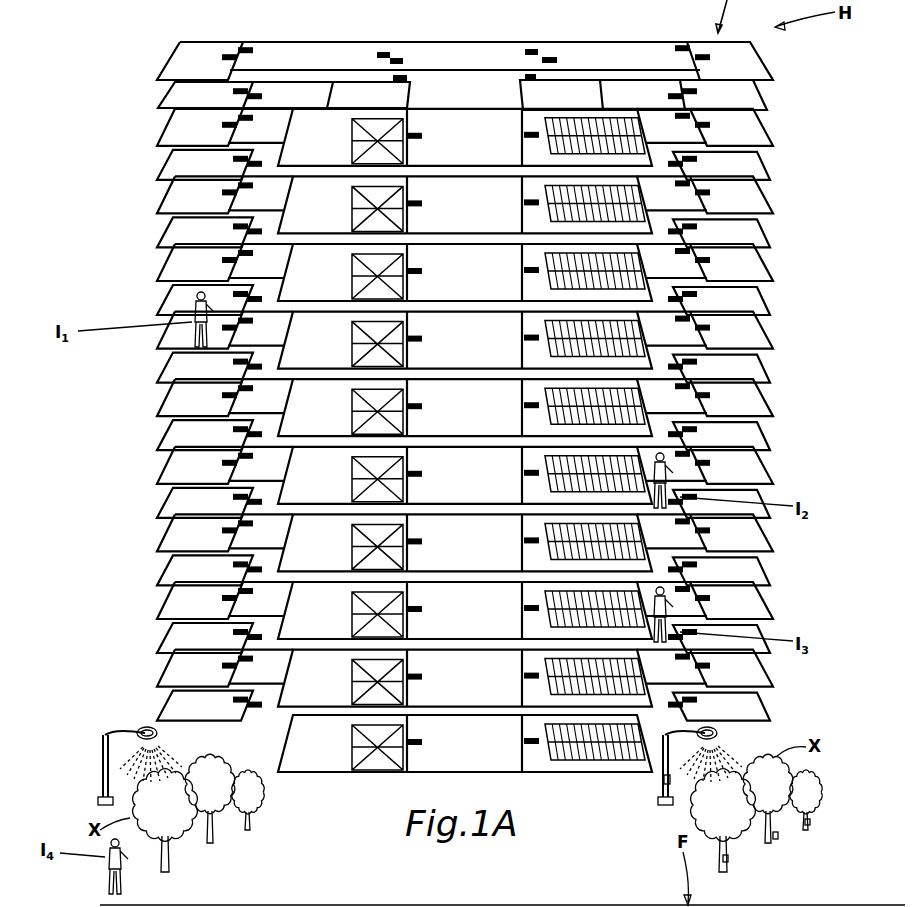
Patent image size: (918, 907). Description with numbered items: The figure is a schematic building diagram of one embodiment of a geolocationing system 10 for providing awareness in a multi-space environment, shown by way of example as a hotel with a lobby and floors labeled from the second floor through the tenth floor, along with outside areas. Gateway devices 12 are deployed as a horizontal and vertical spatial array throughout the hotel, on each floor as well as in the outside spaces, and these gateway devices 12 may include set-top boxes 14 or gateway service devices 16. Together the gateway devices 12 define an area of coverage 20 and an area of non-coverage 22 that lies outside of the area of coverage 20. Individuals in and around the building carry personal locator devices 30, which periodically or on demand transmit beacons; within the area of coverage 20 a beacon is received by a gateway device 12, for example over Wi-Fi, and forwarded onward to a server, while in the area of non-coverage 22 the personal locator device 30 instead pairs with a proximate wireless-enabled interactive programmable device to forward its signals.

The geolocationing system 10 is at (85, 98).
The gateway devices 12 is at (390, 61).
The set-top boxes 14 is at (525, 77).
The gateway service devices 16 is at (473, 448).
The area of coverage 20 is at (802, 455).
The area of non-coverage 22 is at (275, 805).
The personal locator devices 30 is at (123, 858).